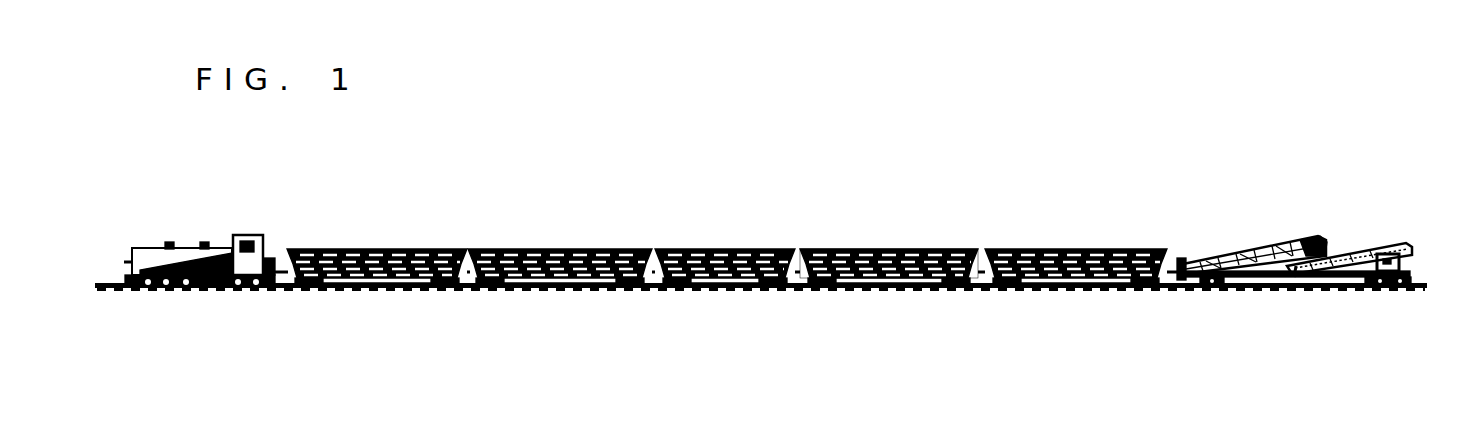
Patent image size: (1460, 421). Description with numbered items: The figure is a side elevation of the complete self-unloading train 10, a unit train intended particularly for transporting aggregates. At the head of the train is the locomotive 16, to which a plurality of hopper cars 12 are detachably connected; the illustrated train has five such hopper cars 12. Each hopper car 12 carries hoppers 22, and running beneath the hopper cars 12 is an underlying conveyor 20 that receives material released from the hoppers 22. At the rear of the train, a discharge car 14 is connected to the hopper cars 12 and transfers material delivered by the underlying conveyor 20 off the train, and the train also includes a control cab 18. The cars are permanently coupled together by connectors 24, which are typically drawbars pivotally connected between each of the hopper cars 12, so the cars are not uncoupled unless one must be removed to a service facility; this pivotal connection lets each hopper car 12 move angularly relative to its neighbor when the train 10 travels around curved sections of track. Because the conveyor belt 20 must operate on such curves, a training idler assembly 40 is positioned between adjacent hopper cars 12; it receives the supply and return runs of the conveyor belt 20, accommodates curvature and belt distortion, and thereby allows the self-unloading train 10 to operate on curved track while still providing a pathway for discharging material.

The self-unloading train 10 is at (890, 185).
The hopper car 12 is at (858, 285).
The discharge car 14 is at (1272, 235).
The locomotive 16 is at (268, 228).
The control cab 18 is at (1408, 258).
The underlying conveyor 20 is at (1052, 283).
The hopper 22 is at (598, 250).
The connector 24 is at (463, 285).
The training idler assembly 40 is at (648, 288).